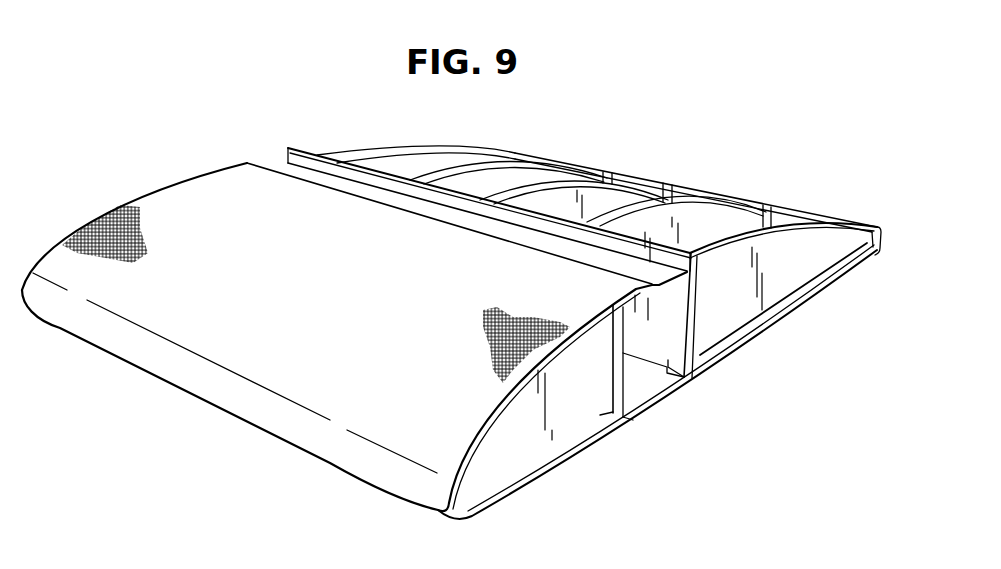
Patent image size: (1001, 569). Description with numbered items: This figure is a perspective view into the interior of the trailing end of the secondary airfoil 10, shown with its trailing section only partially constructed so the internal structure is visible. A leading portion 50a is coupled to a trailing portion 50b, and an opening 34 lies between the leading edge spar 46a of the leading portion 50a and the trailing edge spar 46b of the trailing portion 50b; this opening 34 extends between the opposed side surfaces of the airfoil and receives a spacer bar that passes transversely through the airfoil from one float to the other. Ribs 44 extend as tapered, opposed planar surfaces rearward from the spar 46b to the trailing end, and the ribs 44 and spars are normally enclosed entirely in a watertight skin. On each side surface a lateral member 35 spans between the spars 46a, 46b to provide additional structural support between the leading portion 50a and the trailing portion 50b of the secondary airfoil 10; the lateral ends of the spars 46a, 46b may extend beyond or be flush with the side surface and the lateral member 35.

The secondary airfoil 10 is at (778, 139).
The opening 34 is at (643, 381).
The lateral member 35 is at (634, 308).
The ribs 44 is at (693, 233).
The leading edge spar 46a is at (627, 332).
The trailing edge spar 46b is at (703, 281).
The leading portion 50a is at (510, 447).
The trailing portion 50b is at (820, 247).